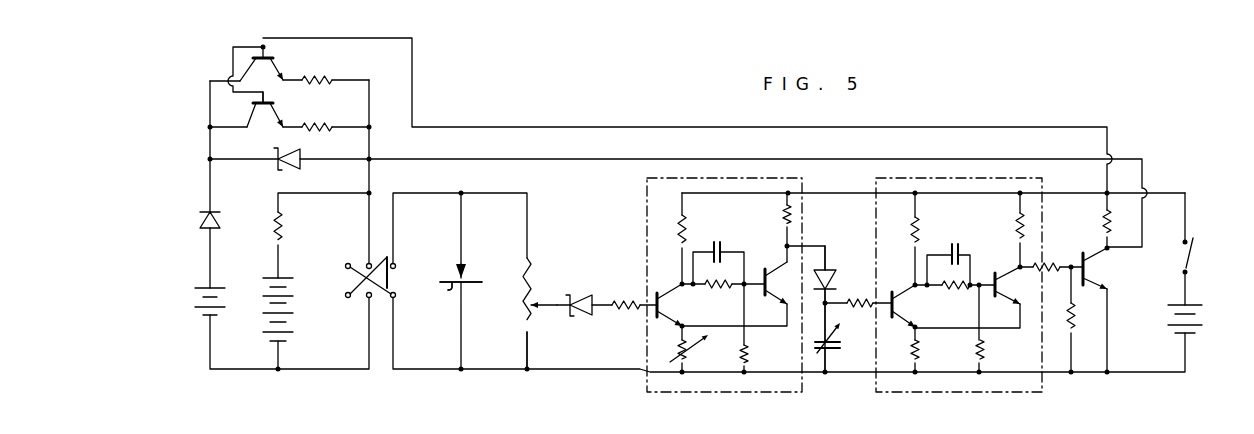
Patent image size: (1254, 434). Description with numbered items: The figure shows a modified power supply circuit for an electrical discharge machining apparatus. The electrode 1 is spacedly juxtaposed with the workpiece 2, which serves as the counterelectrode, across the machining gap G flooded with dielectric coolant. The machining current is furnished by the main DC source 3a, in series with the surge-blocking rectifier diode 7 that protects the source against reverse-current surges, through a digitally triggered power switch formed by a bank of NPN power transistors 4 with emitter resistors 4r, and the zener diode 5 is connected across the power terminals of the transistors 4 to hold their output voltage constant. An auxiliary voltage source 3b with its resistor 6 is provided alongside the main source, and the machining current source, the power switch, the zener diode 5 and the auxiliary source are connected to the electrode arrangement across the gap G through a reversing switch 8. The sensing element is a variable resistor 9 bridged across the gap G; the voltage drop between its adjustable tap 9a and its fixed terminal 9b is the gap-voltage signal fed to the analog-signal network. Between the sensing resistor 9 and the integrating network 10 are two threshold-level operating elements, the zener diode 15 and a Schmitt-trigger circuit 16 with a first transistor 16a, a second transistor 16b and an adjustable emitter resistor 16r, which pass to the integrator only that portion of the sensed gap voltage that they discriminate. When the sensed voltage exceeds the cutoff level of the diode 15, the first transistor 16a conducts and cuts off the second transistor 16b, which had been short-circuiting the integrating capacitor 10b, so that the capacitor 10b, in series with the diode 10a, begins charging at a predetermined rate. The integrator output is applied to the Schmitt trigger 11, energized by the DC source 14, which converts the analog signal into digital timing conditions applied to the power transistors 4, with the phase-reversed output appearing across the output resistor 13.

The electrode 1 is at (463, 255).
The workpiece 2 is at (444, 301).
The machining gap G is at (466, 272).
The main DC source 3a is at (199, 306).
The auxiliary voltage source 3b is at (296, 304).
The power transistors 4 is at (276, 58).
The emitter resistors 4r is at (318, 78).
The zener diode 5 is at (301, 165).
The resistor 6 is at (285, 223).
The surge-blocking rectifier diode 7 is at (200, 227).
The reversing switch 8 is at (356, 260).
The sensing resistor 9 is at (518, 310).
The adjustable tap 9a is at (547, 302).
The fixed terminal 9b is at (527, 373).
The integrator network 10 is at (846, 419).
The diode 10a is at (832, 278).
The capacitor 10b is at (840, 349).
The threshold gating circuit 11 is at (1074, 416).
The output resistor 13 is at (1104, 232).
The DC source 14 is at (1200, 336).
The zener diode 15 is at (580, 319).
The Schmitt-trigger circuit 16 is at (717, 393).
The first transistor 16a is at (672, 314).
The second transistor 16b is at (760, 271).
The emitter resistor 16r is at (696, 352).